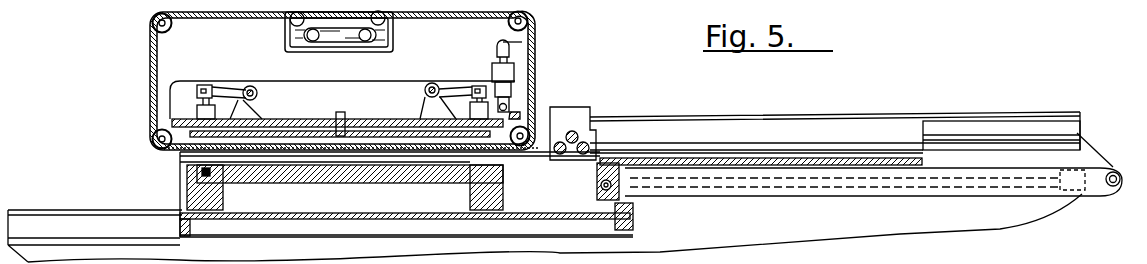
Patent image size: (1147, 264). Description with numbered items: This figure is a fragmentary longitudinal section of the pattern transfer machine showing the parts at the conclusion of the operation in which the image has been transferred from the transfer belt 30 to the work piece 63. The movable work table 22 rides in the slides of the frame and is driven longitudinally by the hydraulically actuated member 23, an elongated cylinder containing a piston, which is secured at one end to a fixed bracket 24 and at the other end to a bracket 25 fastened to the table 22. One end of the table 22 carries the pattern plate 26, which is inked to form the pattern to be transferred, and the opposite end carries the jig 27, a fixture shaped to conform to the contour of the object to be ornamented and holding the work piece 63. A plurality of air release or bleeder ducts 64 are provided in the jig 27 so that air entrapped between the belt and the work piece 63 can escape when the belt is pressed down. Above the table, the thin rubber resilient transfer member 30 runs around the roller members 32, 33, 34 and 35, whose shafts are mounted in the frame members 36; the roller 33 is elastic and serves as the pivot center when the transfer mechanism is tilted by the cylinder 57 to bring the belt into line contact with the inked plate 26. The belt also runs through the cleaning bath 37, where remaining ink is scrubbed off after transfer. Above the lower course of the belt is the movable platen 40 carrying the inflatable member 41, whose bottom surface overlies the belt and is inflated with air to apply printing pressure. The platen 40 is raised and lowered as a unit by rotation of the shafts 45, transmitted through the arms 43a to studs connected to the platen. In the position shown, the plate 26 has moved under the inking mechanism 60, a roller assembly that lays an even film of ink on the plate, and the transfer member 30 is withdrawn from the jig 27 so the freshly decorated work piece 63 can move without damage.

The work table 22 is at (628, 220).
The hydraulically actuated member 23 is at (810, 190).
The fixed bracket 24 is at (1100, 158).
The bracket 25 is at (598, 184).
The plate 26 is at (730, 167).
The jig 27 is at (198, 168).
The resilient transfer member 30 is at (534, 77).
The roller member 32 is at (152, 138).
The roller 33 is at (536, 106).
The roller member 34 is at (528, 17).
The roller member 35 is at (150, 20).
The frame members 36 is at (160, 63).
The cleaning bath 37 is at (396, 51).
The movable platen 40 is at (283, 127).
The inflatable member 41 is at (312, 128).
The arms 43a is at (219, 90).
The shafts 45 is at (251, 87).
The cylinder 57 is at (504, 67).
The inking mechanism 60 is at (589, 117).
The work piece 63 is at (186, 166).
The bleeder ducts 64 is at (233, 190).